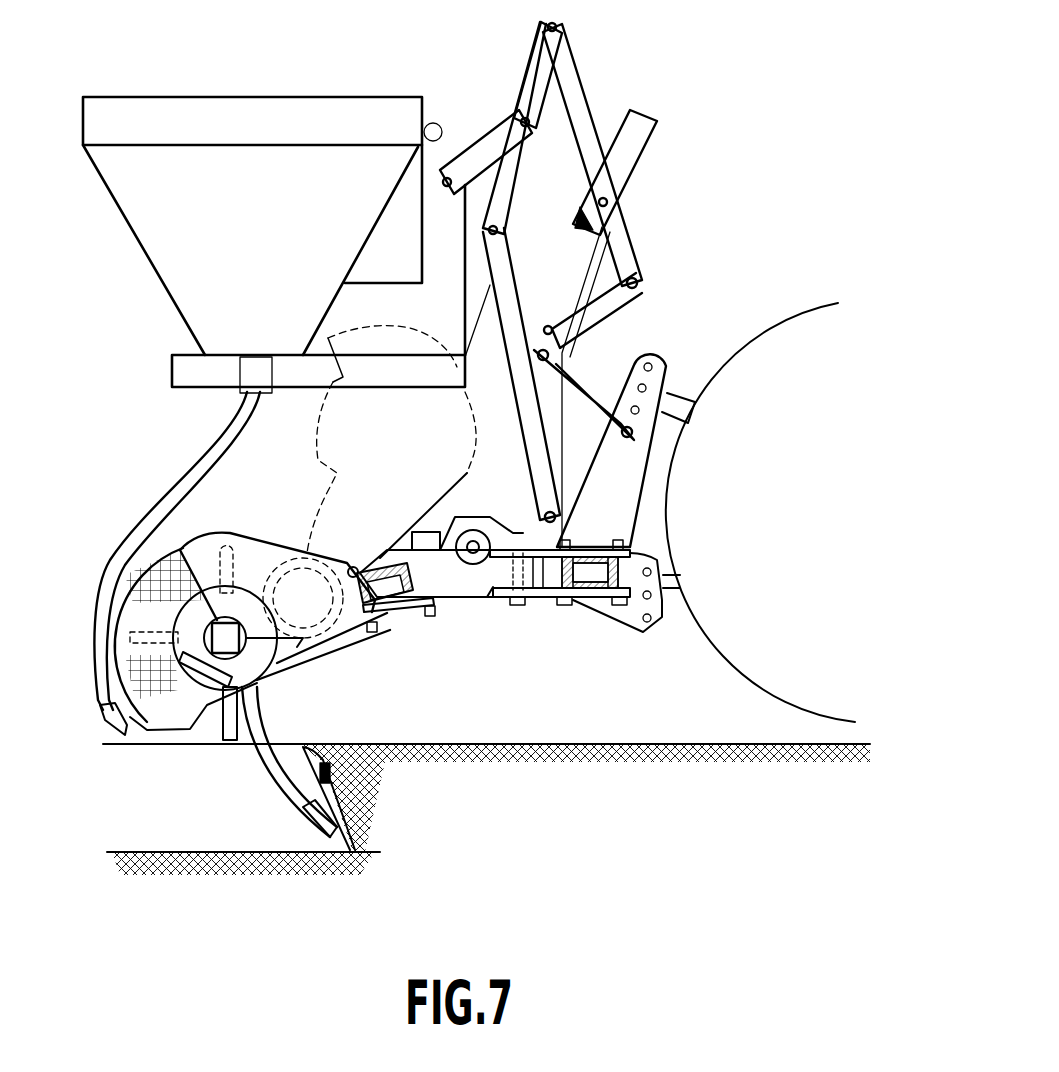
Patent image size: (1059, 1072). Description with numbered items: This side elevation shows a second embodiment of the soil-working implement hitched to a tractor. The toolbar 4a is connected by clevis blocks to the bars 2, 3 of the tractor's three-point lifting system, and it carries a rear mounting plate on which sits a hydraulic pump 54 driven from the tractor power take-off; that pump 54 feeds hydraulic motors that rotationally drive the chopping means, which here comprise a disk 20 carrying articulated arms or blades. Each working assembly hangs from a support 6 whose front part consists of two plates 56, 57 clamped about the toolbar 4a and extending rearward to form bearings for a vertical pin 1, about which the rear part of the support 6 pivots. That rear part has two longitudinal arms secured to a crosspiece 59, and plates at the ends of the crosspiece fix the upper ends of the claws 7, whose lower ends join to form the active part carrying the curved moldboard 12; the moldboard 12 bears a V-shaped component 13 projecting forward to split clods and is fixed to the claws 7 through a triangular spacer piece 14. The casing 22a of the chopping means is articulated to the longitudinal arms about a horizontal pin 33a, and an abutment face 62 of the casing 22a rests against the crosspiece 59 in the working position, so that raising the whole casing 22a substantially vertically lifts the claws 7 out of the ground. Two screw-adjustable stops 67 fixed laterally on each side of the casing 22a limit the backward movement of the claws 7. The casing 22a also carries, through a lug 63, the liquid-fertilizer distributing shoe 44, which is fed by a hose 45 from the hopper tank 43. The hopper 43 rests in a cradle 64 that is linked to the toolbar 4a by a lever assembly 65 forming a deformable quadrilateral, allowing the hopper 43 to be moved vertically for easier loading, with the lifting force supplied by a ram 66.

The hopper tank 43 is at (337, 118).
The lever assembly 65 is at (503, 267).
The ram 66 is at (630, 162).
The bar of the three-point lifting system 2 is at (678, 397).
The bar of the three-point lifting system 3 is at (680, 588).
The vertical pin 1 is at (518, 603).
The hydraulic pump 54 is at (495, 523).
The support 6 is at (500, 606).
The plate 56 is at (592, 547).
The plate 57 is at (575, 607).
The toolbar 4a is at (577, 600).
The abutment face 62 is at (380, 592).
The crosspiece 59 is at (407, 603).
The disk 20 is at (263, 680).
The lug 63 is at (150, 728).
The casing 22a is at (210, 560).
The horizontal pin 33a is at (357, 567).
The cradle 64 is at (382, 377).
The hose 45 is at (207, 468).
The liquid-fertilizer distributing shoe 44 is at (110, 715).
The stop 67 is at (207, 713).
The claw 7 is at (277, 790).
The spacer piece 14 is at (308, 807).
The V-shaped component 13 is at (323, 771).
The curved moldboard 12 is at (360, 842).